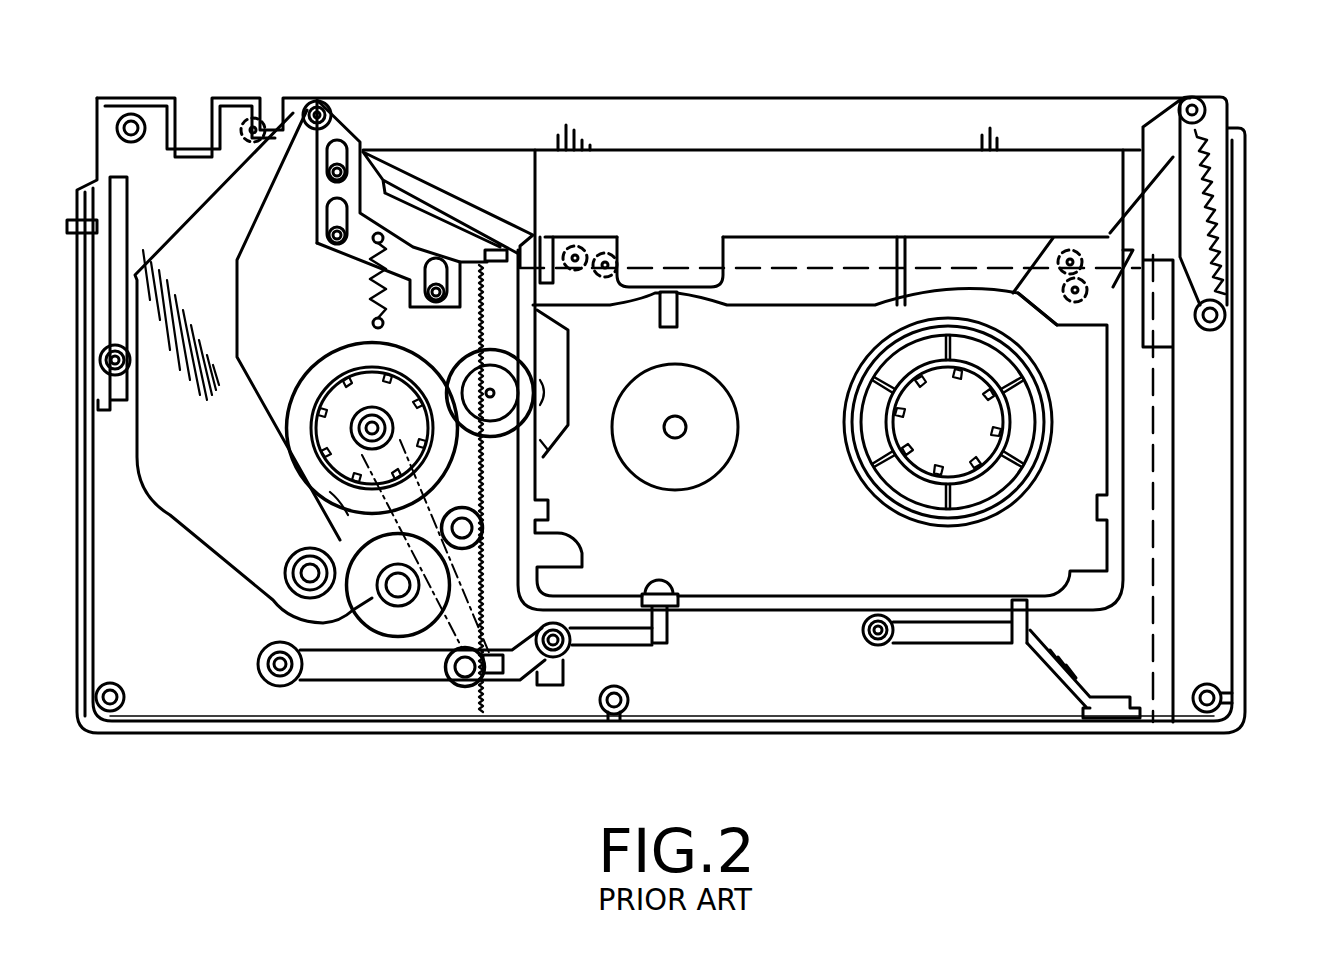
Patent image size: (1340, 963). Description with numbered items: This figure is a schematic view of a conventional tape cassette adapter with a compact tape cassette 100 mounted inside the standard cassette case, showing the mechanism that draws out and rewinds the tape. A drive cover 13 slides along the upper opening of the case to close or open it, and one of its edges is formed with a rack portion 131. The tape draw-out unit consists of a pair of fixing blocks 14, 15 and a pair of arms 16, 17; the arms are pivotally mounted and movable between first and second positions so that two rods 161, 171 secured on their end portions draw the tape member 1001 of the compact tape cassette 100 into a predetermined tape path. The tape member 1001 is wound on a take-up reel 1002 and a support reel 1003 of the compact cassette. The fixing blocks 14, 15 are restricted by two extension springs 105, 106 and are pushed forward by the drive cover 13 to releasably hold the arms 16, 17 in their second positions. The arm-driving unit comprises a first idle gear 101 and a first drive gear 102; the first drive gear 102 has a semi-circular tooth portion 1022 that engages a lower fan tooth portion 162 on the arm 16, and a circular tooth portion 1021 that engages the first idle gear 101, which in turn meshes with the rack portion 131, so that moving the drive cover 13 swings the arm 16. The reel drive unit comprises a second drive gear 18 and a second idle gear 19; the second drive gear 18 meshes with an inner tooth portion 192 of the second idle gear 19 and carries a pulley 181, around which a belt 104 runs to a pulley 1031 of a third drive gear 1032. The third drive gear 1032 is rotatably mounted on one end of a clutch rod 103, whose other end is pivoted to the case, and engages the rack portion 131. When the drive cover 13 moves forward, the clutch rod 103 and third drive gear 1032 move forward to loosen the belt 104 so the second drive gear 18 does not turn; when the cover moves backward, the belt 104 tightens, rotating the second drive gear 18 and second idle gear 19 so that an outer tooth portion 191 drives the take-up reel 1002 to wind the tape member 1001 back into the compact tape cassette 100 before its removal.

The drive cover 13 is at (793, 707).
The fixing block 14 is at (377, 217).
The fixing block 15 is at (1106, 250).
The arm 16 is at (192, 235).
The arm 17 is at (1213, 170).
The second drive gear 18 is at (330, 365).
The second idle gear 19 is at (467, 355).
The compact tape cassette 100 is at (790, 320).
The first idle gear 101 is at (500, 557).
The first drive gear 102 is at (380, 623).
The clutch rod 103 is at (325, 673).
The belt 104 is at (437, 640).
The extension spring 105 is at (387, 298).
The extension spring 106 is at (1213, 228).
The rack portion 131 is at (467, 510).
The rod 161 is at (300, 130).
The fan tooth portion 162 is at (335, 500).
The rod 171 is at (1193, 97).
The pulley 181 is at (357, 422).
The outer tooth portion 191 is at (547, 453).
The inner tooth portion 192 is at (533, 397).
The tape member 1001 is at (457, 190).
The take-up reel 1002 is at (553, 352).
The support reel 1003 is at (863, 477).
The circular tooth portion 1021 is at (357, 623).
The semi-circular tooth portion 1022 is at (357, 540).
The pulley 1031 is at (440, 680).
The third drive gear 1032 is at (478, 683).